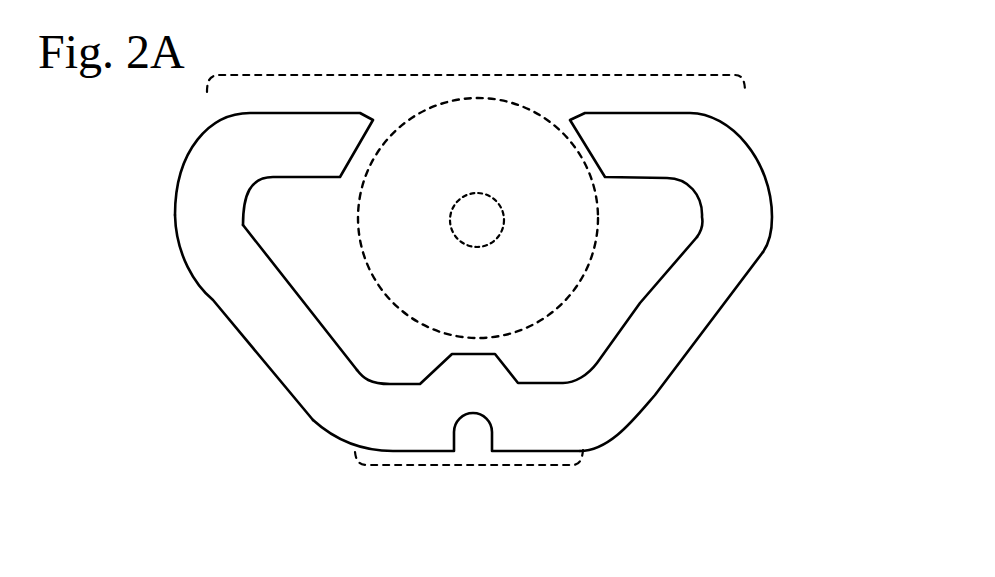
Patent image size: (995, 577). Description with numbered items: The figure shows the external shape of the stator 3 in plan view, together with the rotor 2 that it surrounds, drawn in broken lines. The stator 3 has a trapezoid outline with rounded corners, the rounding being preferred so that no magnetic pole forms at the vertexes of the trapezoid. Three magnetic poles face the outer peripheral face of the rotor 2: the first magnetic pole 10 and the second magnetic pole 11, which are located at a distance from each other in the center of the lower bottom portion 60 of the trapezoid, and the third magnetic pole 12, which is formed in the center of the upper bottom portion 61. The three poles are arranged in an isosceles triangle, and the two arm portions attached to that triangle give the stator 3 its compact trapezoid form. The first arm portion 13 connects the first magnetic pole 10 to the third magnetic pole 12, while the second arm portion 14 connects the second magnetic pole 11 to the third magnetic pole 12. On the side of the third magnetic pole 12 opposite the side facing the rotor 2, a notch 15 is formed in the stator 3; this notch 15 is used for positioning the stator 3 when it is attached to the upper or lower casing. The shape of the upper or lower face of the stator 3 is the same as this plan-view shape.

The rotor 2 is at (597, 233).
The stator 3 is at (494, 278).
The first magnetic pole 10 is at (330, 140).
The second magnetic pole 11 is at (605, 137).
The third magnetic pole 12 is at (478, 372).
The first arm portion 13 is at (277, 315).
The second arm portion 14 is at (693, 295).
The notch 15 is at (477, 437).
The lower bottom portion 60 is at (477, 75).
The upper bottom portion 61 is at (470, 465).